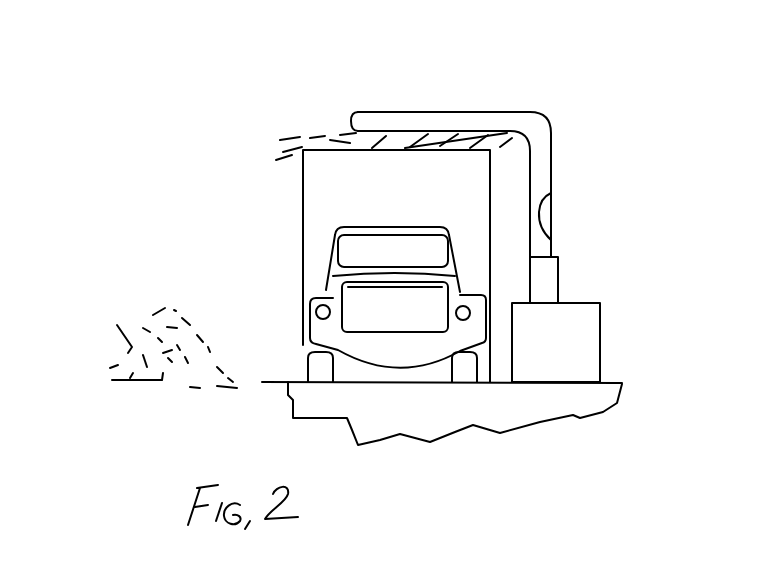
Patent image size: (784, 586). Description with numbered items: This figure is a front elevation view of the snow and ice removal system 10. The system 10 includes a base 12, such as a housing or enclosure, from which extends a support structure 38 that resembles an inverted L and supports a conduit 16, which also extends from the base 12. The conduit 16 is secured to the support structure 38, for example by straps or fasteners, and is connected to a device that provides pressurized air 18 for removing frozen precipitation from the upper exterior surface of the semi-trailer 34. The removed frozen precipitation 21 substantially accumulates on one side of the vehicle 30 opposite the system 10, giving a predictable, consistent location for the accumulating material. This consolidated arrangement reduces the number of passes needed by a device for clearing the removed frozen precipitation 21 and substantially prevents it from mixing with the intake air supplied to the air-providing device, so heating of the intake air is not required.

The snow and ice removal system 10 is at (710, 375).
The base 12 is at (687, 302).
The conduit 16 is at (607, 163).
The pressurized air 18 is at (510, 33).
The removed frozen precipitation 21 is at (135, 315).
The vehicle 30 is at (314, 266).
The semi-trailer 34 is at (341, 266).
The support structure 38 is at (597, 214).